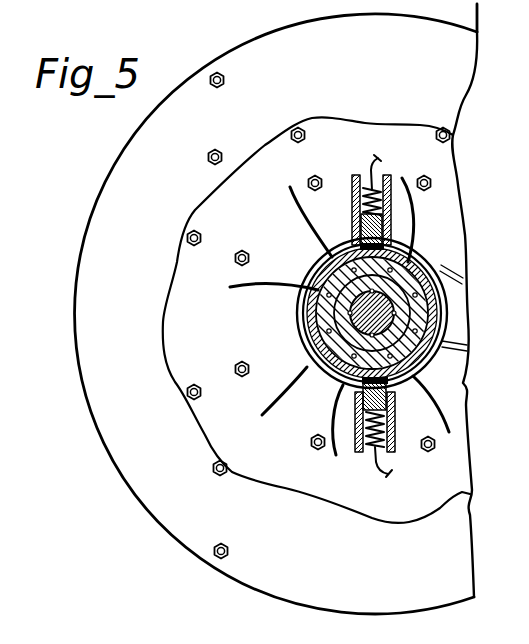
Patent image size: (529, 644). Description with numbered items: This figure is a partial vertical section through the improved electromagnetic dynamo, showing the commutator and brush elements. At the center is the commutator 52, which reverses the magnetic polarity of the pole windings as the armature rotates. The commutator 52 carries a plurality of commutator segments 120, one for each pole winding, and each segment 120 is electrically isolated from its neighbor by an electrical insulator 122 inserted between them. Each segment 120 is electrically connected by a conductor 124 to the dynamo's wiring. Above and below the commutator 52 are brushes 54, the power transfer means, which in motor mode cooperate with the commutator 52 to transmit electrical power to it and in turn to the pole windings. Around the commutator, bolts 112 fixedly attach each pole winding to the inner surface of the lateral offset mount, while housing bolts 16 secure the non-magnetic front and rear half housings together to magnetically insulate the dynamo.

The housing bolts 16 is at (214, 89).
The commutator 52 is at (303, 338).
The brush 54 is at (391, 238).
The bolts 112 is at (190, 246).
The commutator segments 120 is at (307, 268).
The electrical insulator 122 is at (333, 259).
The conductor 124 is at (415, 213).